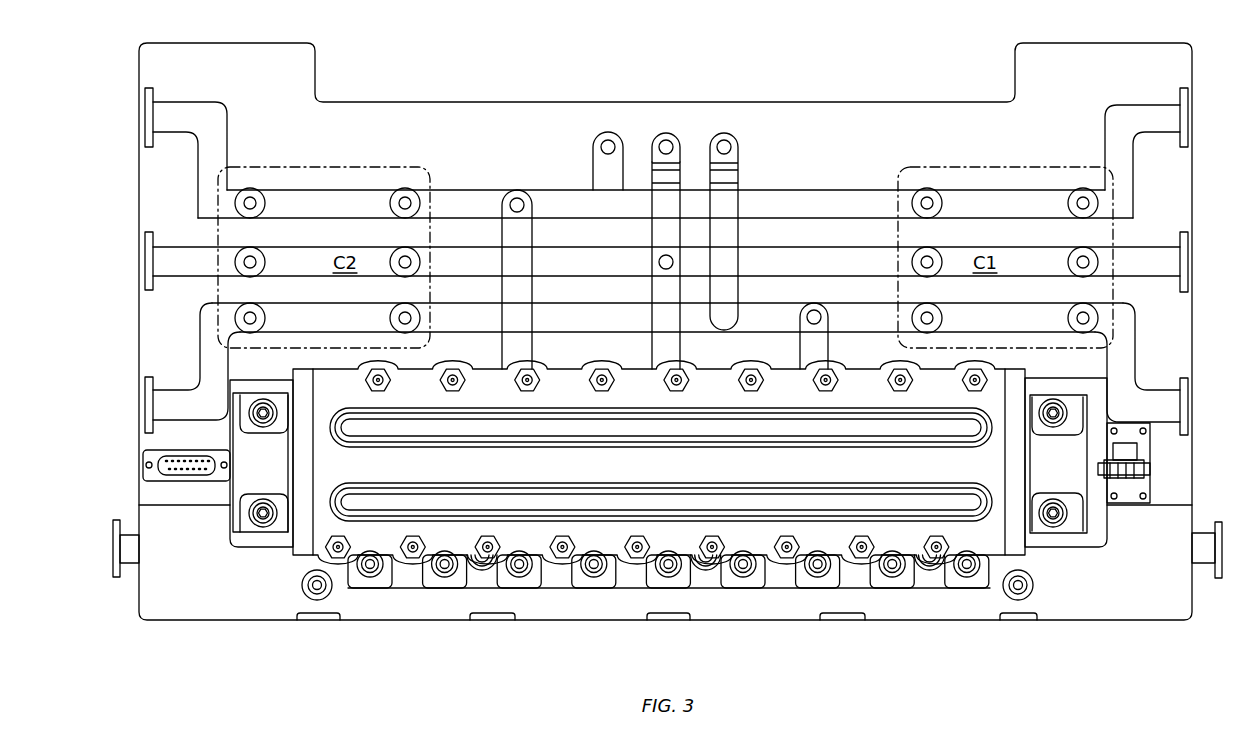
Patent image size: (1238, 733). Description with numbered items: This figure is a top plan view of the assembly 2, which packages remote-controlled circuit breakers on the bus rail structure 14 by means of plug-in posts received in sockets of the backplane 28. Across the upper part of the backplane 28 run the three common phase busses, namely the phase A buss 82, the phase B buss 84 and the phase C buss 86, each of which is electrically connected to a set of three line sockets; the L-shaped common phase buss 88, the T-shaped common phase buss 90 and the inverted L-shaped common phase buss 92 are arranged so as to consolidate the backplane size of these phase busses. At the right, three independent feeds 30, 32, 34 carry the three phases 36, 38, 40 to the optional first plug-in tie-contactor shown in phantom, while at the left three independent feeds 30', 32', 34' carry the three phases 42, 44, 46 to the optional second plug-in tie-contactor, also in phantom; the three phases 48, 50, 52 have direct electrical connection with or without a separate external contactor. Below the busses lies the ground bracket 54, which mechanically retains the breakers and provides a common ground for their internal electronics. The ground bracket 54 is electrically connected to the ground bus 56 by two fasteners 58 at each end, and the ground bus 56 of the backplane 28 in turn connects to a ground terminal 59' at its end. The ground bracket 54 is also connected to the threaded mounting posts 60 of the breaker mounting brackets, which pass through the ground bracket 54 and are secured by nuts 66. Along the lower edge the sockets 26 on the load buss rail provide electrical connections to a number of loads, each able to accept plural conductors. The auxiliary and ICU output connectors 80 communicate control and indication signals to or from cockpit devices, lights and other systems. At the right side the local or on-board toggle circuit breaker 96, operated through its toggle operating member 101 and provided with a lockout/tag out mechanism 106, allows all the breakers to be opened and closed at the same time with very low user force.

The assembly 2 is at (659, 67).
The bus rail structure 14 is at (108, 606).
The sockets 26 is at (595, 590).
The backplane 28 is at (343, 118).
The feed 30 is at (1204, 406).
The feed 30' is at (123, 405).
The feed 32 is at (1204, 262).
The feed 32' is at (123, 261).
The feed 34 is at (1204, 117).
The feed 34' is at (123, 117).
The phase 36 is at (1069, 324).
The phase 38 is at (1069, 266).
The phase 40 is at (1069, 208).
The phase 42 is at (264, 325).
The phase 44 is at (264, 269).
The phase 46 is at (264, 211).
The phase 48 is at (729, 150).
The phase 50 is at (668, 150).
The phase 52 is at (598, 143).
The ground bracket 54 is at (348, 462).
The ground bus 56 is at (1170, 603).
The fasteners 58 is at (250, 396).
The ground terminal 59' is at (102, 548).
The threaded mounting posts 60 is at (391, 386).
The nuts 66 is at (450, 360).
The auxiliary and ICU output connectors 80 is at (197, 482).
The phase A buss 82 is at (866, 318).
The phase B buss 84 is at (866, 262).
The phase C buss 86 is at (866, 200).
The L-shaped common phase buss 88 is at (832, 347).
The T-shaped common phase buss 90 is at (684, 347).
The inverted L-shaped common phase buss 92 is at (531, 347).
The toggle circuit breaker 96 is at (1150, 485).
The toggle operating member 101 is at (1137, 448).
The lockout/tag out mechanism 106 is at (1122, 480).